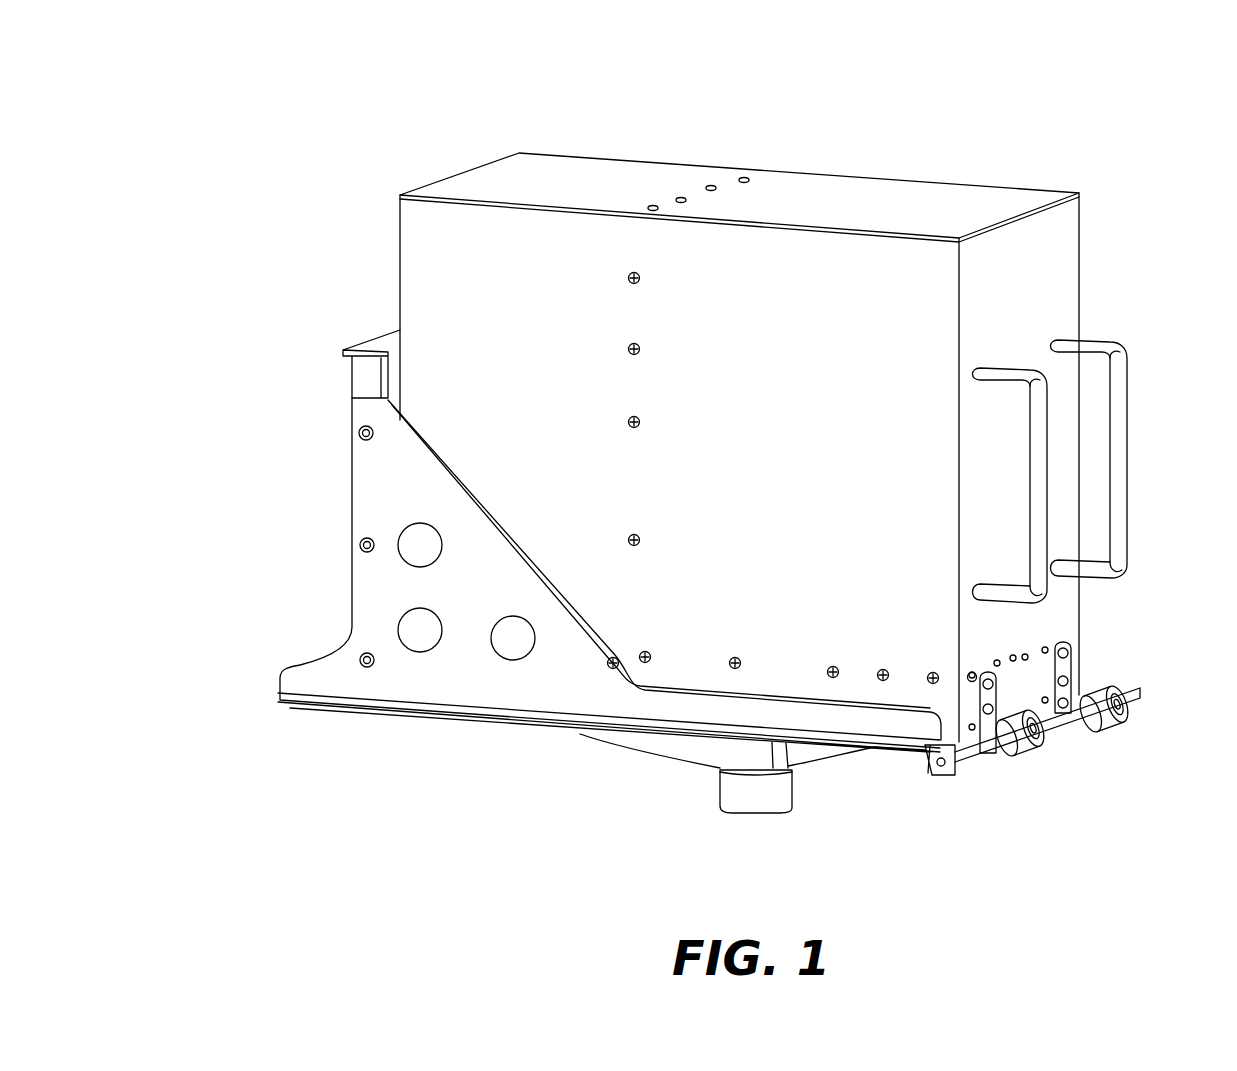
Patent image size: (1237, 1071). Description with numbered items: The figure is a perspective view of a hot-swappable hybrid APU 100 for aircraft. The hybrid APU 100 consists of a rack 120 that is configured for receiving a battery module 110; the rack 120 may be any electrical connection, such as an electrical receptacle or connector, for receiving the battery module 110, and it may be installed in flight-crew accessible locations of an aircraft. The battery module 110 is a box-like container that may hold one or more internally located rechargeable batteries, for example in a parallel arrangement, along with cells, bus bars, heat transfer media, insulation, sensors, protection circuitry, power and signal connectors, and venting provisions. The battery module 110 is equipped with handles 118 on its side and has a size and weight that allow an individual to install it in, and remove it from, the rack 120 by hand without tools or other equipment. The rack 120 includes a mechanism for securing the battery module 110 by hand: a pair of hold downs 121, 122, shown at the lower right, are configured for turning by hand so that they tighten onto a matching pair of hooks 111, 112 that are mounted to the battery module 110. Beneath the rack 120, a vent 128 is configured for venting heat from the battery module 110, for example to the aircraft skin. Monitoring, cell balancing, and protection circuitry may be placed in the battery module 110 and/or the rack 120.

The hot-swappable hybrid APU 100 is at (236, 116).
The battery module 110 is at (480, 166).
The hook 111 is at (985, 693).
The hook 112 is at (1063, 665).
The handles 118 is at (1047, 448).
The rack 120 is at (352, 548).
The hold down 121 is at (1018, 762).
The hold down 122 is at (1105, 736).
The vent 128 is at (754, 816).